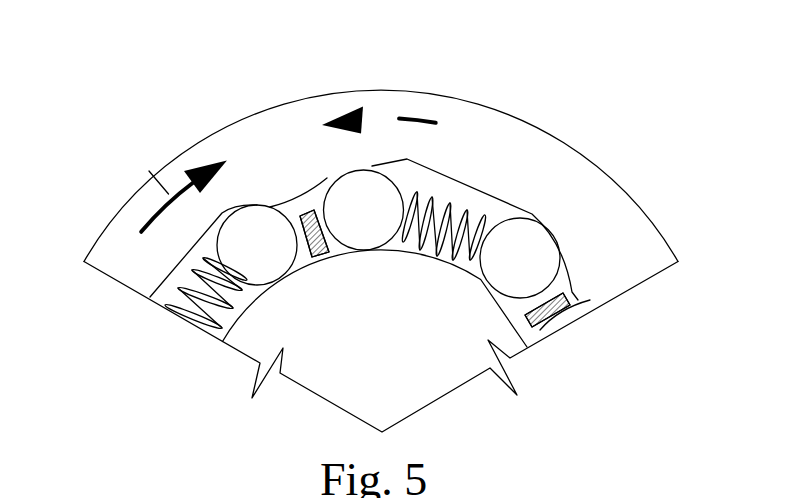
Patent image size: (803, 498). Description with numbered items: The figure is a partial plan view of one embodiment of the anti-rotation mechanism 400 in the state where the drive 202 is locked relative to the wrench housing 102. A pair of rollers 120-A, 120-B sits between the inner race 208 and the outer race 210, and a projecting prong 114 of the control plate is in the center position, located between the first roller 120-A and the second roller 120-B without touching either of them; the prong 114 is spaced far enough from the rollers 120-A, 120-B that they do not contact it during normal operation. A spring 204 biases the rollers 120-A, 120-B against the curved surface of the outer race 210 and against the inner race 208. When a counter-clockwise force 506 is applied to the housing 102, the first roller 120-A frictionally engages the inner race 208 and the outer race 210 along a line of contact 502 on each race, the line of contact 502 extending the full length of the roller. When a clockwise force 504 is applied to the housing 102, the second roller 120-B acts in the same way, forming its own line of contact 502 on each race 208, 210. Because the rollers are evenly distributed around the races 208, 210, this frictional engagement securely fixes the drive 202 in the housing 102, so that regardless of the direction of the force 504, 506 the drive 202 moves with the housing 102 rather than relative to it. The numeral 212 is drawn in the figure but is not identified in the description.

The anti-rotation mechanism 400 is at (130, 97).
The wrench housing 102 is at (268, 109).
The drive 202 is at (452, 362).
The first roller 120-A is at (285, 255).
The second roller 120-B is at (393, 220).
The outer race 210 is at (513, 192).
The inner race 208 is at (222, 327).
The spring 204 is at (455, 200).
The line of contact 502 is at (337, 180).
The clockwise force 504 is at (149, 173).
The counter-clockwise force 506 is at (395, 119).
The prong 114 is at (570, 297).
The ramp surface 212 is at (572, 296).